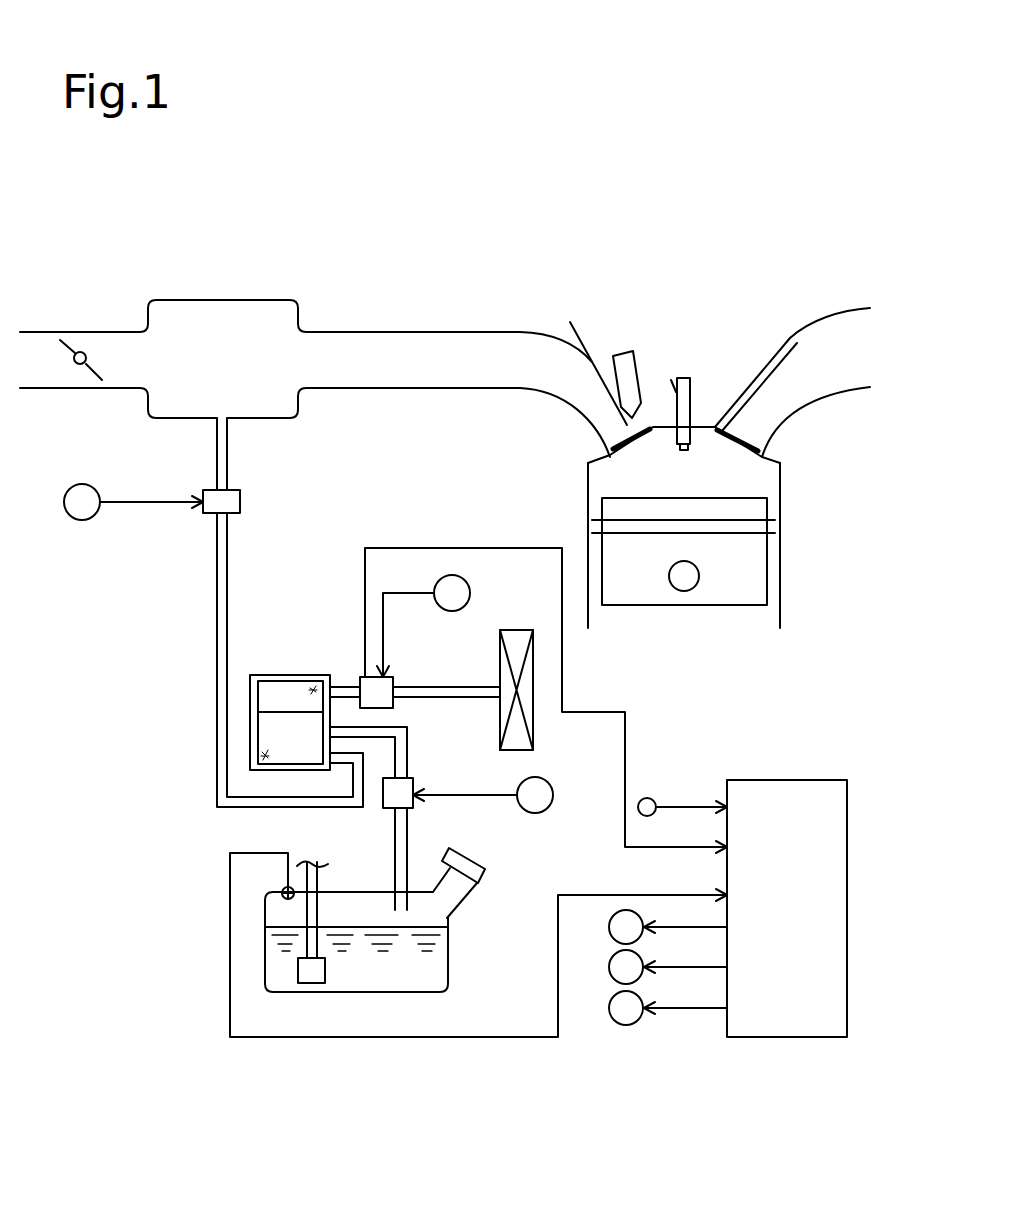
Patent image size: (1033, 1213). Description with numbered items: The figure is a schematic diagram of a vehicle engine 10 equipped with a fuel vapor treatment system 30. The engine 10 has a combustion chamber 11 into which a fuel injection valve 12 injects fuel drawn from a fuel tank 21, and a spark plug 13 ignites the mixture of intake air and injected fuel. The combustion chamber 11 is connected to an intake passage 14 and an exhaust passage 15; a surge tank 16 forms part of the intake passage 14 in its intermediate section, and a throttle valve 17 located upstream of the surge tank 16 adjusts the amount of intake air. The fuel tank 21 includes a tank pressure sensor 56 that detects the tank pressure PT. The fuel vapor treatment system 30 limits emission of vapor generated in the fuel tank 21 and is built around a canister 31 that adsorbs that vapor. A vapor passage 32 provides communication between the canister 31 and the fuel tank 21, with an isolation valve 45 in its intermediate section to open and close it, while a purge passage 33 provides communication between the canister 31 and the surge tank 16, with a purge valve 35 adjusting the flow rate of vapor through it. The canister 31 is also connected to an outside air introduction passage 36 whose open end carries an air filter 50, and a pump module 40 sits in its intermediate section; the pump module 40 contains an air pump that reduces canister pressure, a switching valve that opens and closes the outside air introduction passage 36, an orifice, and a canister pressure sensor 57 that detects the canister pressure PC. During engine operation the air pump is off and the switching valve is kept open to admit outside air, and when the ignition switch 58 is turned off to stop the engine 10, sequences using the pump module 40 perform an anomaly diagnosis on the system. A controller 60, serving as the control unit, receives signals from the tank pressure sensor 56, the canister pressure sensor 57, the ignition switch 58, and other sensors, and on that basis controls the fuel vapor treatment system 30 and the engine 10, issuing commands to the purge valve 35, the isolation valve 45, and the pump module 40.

The engine 10 is at (808, 549).
The combustion chamber 11 is at (736, 478).
The fuel injection valve 12 is at (640, 365).
The spark plug 13 is at (693, 402).
The intake passage 14 is at (410, 334).
The exhaust passage 15 is at (836, 328).
The surge tank 16 is at (258, 421).
The throttle valve 17 is at (79, 333).
The fuel tank 21 is at (450, 960).
The fuel vapor treatment system 30 is at (196, 719).
The canister 31 is at (292, 675).
The vapor passage 32 is at (393, 838).
The purge passage 33 is at (215, 620).
The purge valve 35 is at (240, 513).
The outside air introduction passage 36 is at (445, 687).
The pump module 40 is at (393, 678).
The isolation valve 45 is at (415, 778).
The air filter 50 is at (515, 628).
The tank pressure sensor 56 is at (283, 888).
The canister pressure sensor 57 is at (358, 682).
The ignition switch 58 is at (647, 797).
The controller 60 is at (786, 778).